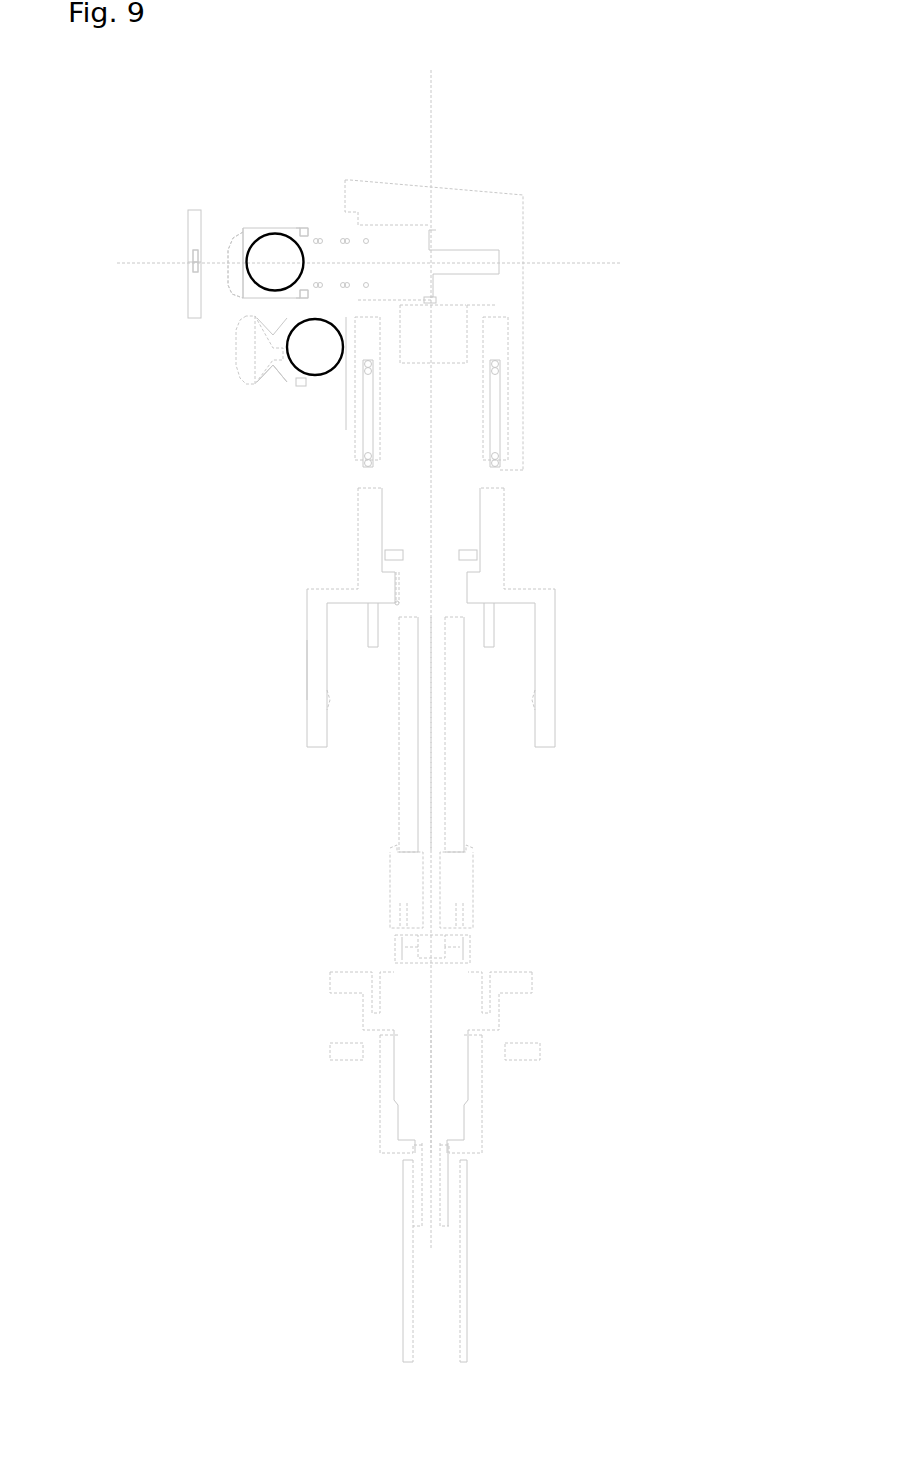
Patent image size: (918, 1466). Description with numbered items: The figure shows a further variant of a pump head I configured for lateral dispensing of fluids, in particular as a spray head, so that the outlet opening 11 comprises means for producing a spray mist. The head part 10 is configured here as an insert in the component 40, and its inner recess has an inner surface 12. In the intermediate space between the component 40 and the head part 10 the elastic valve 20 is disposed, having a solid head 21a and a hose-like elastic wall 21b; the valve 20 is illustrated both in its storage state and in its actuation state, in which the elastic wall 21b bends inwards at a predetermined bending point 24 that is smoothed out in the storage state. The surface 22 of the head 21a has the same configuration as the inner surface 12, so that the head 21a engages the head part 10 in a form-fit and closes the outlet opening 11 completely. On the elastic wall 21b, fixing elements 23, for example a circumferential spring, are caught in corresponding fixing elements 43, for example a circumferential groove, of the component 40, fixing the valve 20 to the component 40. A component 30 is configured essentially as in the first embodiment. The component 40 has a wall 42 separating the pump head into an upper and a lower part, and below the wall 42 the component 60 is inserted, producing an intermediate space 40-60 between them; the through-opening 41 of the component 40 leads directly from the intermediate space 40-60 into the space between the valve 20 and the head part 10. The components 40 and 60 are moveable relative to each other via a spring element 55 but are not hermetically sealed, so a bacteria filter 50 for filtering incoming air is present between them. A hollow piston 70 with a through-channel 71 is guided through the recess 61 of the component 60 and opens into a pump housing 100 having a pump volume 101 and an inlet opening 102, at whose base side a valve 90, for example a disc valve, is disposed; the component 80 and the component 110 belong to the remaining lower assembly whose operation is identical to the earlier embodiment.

The head part 10 is at (195, 210).
The outlet opening 11 is at (186, 256).
The inner surface 12 is at (193, 282).
The elastic valve 20 is at (266, 228).
The head 21a is at (235, 243).
The elastic wall 21b is at (284, 233).
The surface 22 is at (233, 352).
The fixing elements 23 is at (306, 228).
The predetermined bending point 24 is at (276, 375).
The component 30 is at (322, 235).
The component 40 is at (463, 188).
The through-opening 41 is at (436, 300).
The wall 42 is at (452, 312).
The fixing elements 43 is at (438, 220).
The intermediate space 40-60 is at (415, 337).
The bacteria filter 50 is at (468, 553).
The spring element 55 is at (508, 470).
The component 60 is at (510, 557).
The recess 61 is at (424, 568).
The hollow piston 70 is at (465, 777).
The through-channel 71 is at (428, 738).
The coupling 80 is at (540, 1050).
The valve 90 is at (470, 937).
The pump housing 100 is at (493, 1128).
The pump volume 101 is at (445, 1070).
The inlet opening 102 is at (440, 1184).
The outlet tube 110 is at (467, 1242).
The pump head I is at (200, 674).